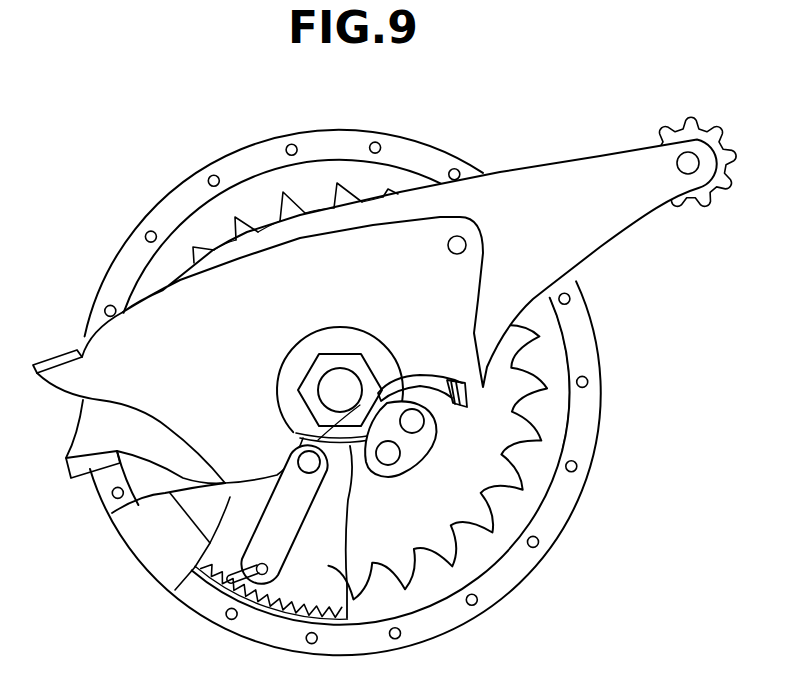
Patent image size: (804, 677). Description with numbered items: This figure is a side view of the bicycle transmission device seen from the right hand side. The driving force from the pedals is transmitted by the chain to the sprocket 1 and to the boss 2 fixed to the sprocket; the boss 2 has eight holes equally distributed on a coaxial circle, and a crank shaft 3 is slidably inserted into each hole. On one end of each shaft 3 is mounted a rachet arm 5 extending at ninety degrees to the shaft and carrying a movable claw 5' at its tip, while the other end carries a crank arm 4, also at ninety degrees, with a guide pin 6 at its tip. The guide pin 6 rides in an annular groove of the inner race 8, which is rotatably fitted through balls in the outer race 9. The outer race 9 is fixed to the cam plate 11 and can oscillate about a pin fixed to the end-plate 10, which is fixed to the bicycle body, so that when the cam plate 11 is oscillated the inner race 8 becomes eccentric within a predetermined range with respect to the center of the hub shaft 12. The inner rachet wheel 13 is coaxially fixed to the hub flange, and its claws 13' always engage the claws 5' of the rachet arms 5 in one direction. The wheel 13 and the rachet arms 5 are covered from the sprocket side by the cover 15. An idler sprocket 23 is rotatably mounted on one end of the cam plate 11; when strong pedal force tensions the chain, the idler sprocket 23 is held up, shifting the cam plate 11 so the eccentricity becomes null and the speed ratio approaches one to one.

The sprocket 1 is at (456, 493).
The boss 2 is at (353, 470).
The crank shaft 3 is at (306, 468).
The crank arm 4 is at (405, 474).
The rachet arm 5 is at (284, 514).
The movable claw 5' is at (245, 554).
The guide pin 6 is at (424, 423).
The inner race 8 is at (427, 380).
The outer race 9 is at (460, 388).
The end-plate 10 is at (113, 360).
The cam plate 11 is at (578, 158).
The hub shaft 12 is at (332, 387).
The inner rachet wheel 13 is at (366, 392).
The claws 13' is at (271, 615).
The cover 15 is at (541, 350).
The idler sprocket 23 is at (685, 206).